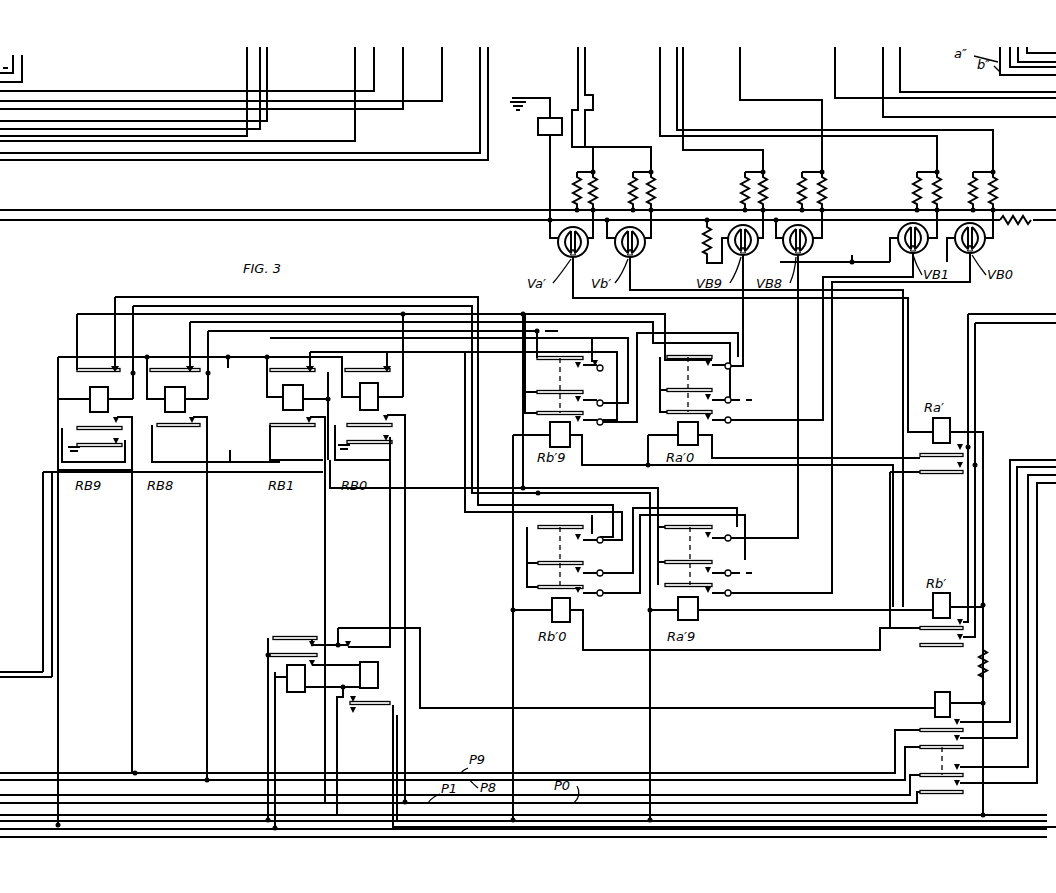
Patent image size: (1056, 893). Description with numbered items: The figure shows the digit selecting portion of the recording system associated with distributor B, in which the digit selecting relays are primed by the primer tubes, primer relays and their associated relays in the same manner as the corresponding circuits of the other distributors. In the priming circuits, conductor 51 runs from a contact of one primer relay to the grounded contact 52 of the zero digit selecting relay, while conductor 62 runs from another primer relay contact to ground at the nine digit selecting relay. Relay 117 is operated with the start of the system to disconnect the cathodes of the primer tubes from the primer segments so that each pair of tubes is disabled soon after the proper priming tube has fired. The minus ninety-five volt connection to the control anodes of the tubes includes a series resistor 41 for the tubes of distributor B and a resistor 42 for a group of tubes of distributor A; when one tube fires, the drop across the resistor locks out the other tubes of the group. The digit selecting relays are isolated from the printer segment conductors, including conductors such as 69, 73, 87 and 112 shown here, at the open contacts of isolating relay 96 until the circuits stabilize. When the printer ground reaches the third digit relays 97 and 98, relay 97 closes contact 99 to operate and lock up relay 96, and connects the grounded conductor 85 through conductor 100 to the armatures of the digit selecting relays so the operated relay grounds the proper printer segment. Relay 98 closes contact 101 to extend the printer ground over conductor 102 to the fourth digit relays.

The relay 117 is at (540, 137).
The series resistor 41 is at (701, 244).
The resistor 42 is at (1028, 222).
The grounded contact 52 is at (395, 438).
The conductor 100 is at (389, 556).
The contact 99 is at (316, 637).
The third digit relay 97 is at (287, 680).
The third digit relay 98 is at (378, 676).
The contact 101 is at (366, 700).
The conductor 51 is at (25, 675).
The conductor 62 is at (28, 680).
The conductor 102 is at (228, 829).
The conductor 112 is at (300, 837).
The grounded conductor 85 is at (708, 815).
The conductor 87 is at (796, 821).
The isolating relay 96 is at (935, 700).
The conductor 73 is at (1010, 480).
The conductor 69 is at (1017, 500).